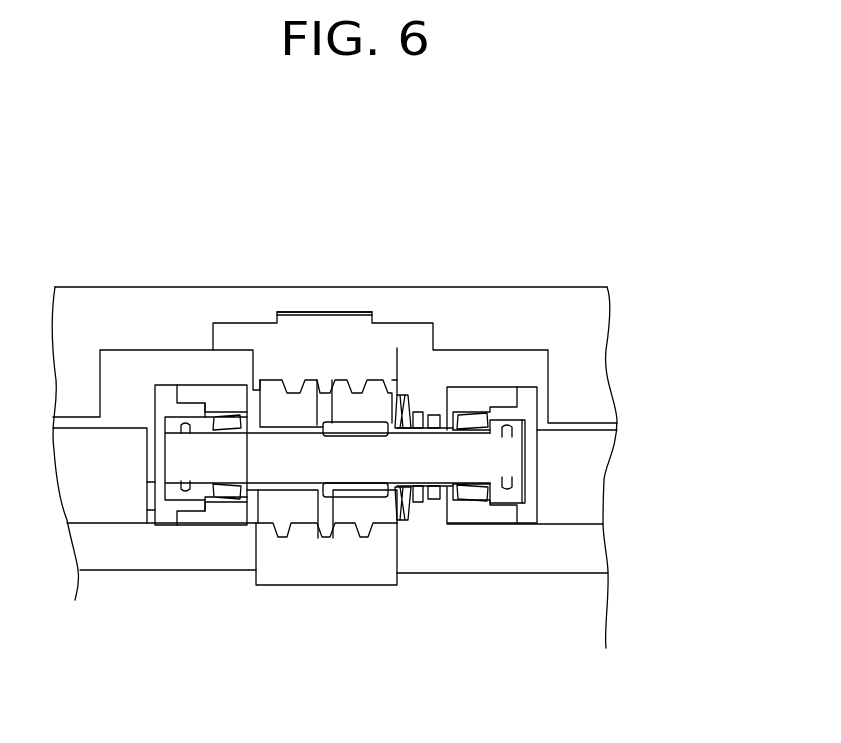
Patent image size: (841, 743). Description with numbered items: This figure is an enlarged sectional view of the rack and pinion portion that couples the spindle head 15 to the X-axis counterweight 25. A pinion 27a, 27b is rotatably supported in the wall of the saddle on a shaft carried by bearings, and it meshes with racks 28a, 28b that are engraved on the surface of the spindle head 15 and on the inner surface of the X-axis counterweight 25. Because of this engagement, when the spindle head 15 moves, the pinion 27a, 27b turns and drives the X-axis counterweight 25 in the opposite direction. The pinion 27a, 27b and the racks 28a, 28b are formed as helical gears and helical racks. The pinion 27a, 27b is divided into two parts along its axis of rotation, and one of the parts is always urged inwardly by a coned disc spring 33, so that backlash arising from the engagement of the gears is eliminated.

The spindle head 15 is at (557, 637).
The X-axis counterweight 25 is at (133, 340).
The pinion 27a is at (293, 415).
The pinion 27b is at (358, 412).
The rack 28a is at (360, 558).
The rack 28b is at (327, 358).
The coned disc spring 33 is at (410, 400).